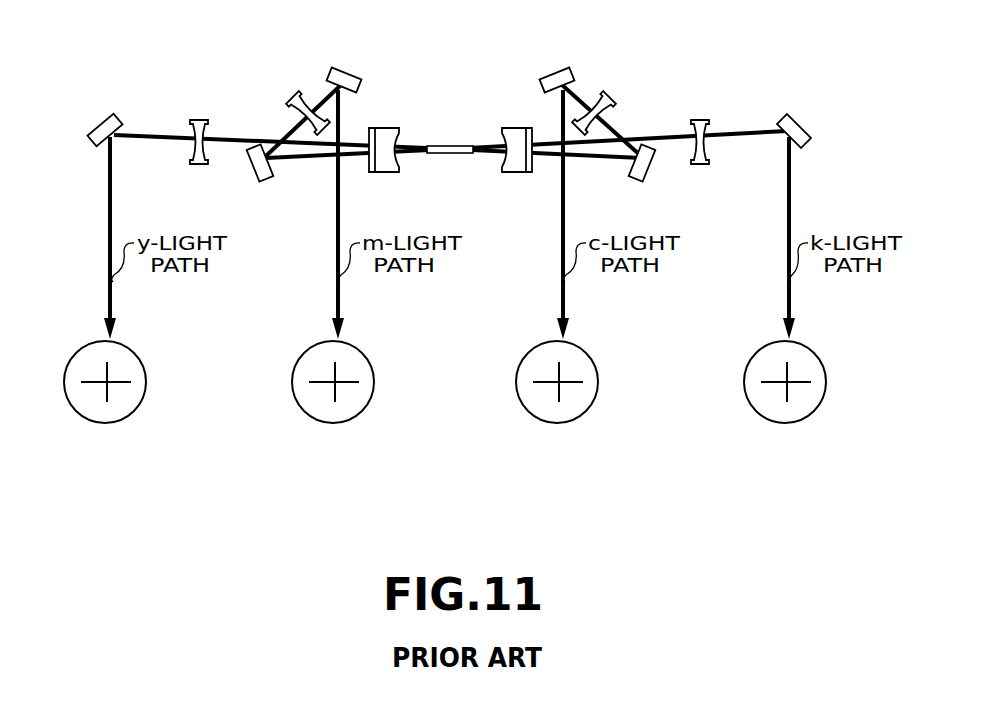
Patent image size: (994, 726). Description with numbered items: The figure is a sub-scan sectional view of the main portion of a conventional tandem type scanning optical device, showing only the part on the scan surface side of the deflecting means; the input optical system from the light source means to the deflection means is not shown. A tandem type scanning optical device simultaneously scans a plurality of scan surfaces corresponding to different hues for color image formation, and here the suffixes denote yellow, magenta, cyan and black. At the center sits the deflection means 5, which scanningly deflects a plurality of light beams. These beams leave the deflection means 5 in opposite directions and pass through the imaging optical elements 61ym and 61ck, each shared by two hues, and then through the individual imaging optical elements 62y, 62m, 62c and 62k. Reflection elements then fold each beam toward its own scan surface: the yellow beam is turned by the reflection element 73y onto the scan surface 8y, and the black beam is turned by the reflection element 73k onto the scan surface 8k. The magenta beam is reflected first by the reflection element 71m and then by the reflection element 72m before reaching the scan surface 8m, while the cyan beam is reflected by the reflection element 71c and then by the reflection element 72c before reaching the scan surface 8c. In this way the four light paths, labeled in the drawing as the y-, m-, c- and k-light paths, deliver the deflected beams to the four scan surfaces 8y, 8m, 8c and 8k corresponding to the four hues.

The deflection means 5 is at (452, 146).
The scan surface 8y is at (122, 355).
The scan surface 8m is at (352, 355).
The scan surface 8c is at (577, 355).
The scan surface 8k is at (805, 355).
The imaging optical element 61ym is at (380, 164).
The imaging optical element 61ck is at (522, 164).
The imaging optical element 62y is at (197, 165).
The imaging optical element 62m is at (292, 104).
The imaging optical element 62c is at (610, 103).
The imaging optical element 62k is at (699, 165).
The reflection element 71m is at (262, 180).
The reflection element 71c is at (640, 180).
The reflection element 72m is at (346, 78).
The reflection element 72c is at (556, 78).
The reflection element 73y is at (97, 122).
The reflection element 73k is at (790, 120).